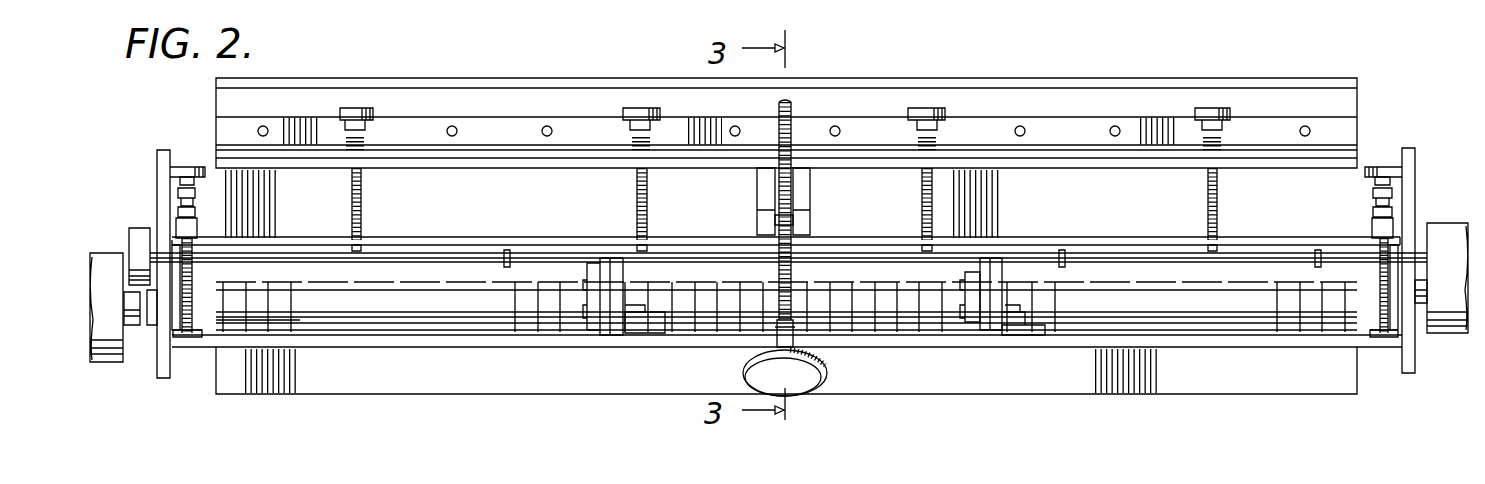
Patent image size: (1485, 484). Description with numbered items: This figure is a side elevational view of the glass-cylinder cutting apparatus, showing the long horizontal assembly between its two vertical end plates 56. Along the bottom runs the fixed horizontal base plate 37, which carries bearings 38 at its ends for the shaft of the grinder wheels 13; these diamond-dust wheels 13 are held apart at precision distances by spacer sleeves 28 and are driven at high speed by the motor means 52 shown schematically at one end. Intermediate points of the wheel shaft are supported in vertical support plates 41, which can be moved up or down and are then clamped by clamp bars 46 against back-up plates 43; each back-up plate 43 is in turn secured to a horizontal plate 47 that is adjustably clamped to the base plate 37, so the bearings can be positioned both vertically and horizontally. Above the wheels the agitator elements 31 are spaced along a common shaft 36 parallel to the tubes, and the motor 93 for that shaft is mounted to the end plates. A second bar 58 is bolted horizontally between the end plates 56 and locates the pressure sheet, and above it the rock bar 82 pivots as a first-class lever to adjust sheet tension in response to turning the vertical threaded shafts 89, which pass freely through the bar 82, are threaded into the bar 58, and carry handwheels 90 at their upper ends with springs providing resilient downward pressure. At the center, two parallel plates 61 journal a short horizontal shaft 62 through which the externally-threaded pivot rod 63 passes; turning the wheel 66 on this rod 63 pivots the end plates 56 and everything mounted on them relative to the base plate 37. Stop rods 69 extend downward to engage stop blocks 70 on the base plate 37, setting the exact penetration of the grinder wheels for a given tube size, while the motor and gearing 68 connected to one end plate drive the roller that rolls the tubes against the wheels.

The grinder wheels 13 is at (1280, 355).
The spacer sleeves 28 is at (282, 320).
The agitator elements 31 is at (508, 252).
The shaft 36 is at (438, 250).
The base plate 37 is at (435, 348).
The bearings 38 is at (175, 325).
The support plates 41 is at (990, 330).
The back-up plates 43 is at (1000, 332).
The clamp bars 46 is at (975, 325).
The horizontal plate 47 is at (645, 330).
The motor means 52 is at (108, 258).
The end plates 56 is at (157, 172).
The second bar 58 is at (1005, 240).
The parallel plates 61 is at (765, 195).
The shaft 62 is at (795, 218).
The pivot rod 63 is at (792, 275).
The wheel 66 is at (822, 378).
The motor and gearing 68 is at (1445, 232).
The stop rods 69 is at (192, 275).
The stop blocks 70 is at (1380, 330).
The rock bar 82 is at (1190, 160).
The threaded shafts 89 is at (648, 198).
The handwheels 90 is at (373, 110).
The motor 93 is at (140, 232).